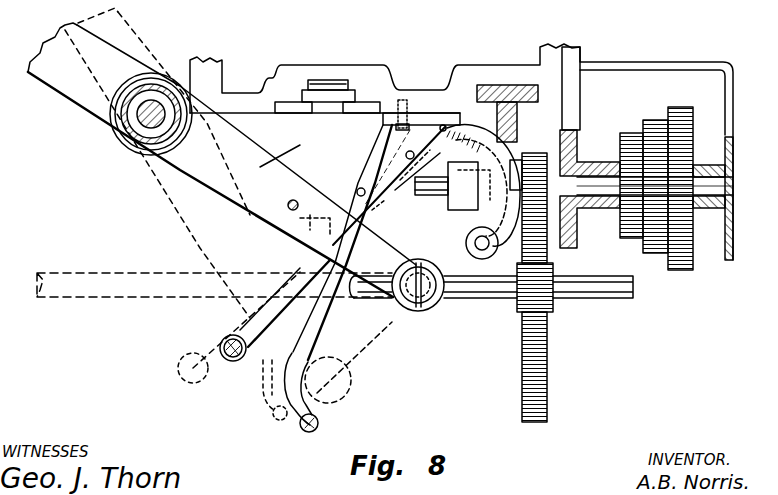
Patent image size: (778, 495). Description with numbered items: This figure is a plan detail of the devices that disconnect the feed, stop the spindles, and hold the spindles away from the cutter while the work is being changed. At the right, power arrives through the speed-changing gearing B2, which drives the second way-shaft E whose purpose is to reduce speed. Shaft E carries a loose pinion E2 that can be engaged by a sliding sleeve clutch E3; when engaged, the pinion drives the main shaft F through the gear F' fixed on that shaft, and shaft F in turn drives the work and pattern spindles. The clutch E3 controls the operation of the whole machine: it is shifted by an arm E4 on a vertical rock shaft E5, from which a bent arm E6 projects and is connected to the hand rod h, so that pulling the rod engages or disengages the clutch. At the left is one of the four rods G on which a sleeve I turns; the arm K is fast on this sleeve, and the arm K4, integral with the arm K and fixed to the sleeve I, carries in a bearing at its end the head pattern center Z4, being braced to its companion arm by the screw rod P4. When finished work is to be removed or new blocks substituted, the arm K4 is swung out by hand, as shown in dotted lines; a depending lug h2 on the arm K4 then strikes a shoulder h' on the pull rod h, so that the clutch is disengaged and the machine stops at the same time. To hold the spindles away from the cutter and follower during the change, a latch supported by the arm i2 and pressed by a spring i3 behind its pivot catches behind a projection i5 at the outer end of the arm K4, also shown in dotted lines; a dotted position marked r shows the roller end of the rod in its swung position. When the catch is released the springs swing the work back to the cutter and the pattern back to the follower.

The arm K is at (62, 78).
The arm K4 is at (299, 143).
The sleeve I is at (127, 120).
The rod G is at (685, 63).
The screw rod P4 is at (290, 202).
The hand rod h is at (219, 336).
The shoulder h' is at (261, 304).
The depending lug h2 is at (300, 226).
The roller position r is at (195, 368).
The arm i2 is at (310, 337).
The spring i3 is at (351, 242).
The projection i5 is at (422, 300).
The head pattern center Z4 is at (440, 305).
The second shaft E is at (732, 186).
The loose pinion E2 is at (528, 160).
The sliding sleeve clutch E3 is at (455, 212).
The arm E4 is at (450, 222).
The vertical rock shaft E5 is at (470, 235).
The bent arm E6 is at (484, 259).
The main shaft F is at (492, 307).
The gear F' is at (552, 342).
The speed-changing gearing B2 is at (686, 272).